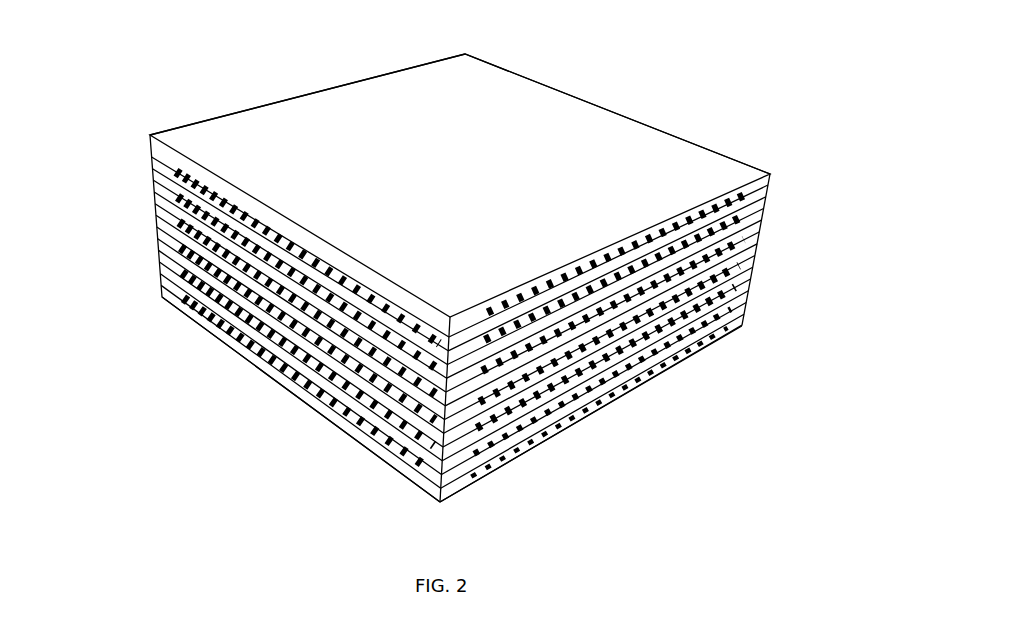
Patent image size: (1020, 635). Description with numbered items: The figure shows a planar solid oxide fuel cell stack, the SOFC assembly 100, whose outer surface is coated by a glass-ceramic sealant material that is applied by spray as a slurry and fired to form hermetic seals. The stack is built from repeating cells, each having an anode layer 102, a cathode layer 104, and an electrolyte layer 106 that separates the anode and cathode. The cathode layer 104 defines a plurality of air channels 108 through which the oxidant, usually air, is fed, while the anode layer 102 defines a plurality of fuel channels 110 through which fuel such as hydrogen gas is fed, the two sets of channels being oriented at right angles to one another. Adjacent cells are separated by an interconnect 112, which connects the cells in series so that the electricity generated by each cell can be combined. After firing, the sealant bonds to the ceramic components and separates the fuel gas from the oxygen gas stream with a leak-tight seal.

The multilayer component 100 is at (692, 63).
The anode layer 102 is at (755, 250).
The cathode layer 104 is at (170, 282).
The electrolyte layer 106 is at (152, 152).
The air channels 108 is at (236, 334).
The fuel channels 110 is at (355, 287).
The interconnect 112 is at (637, 240).